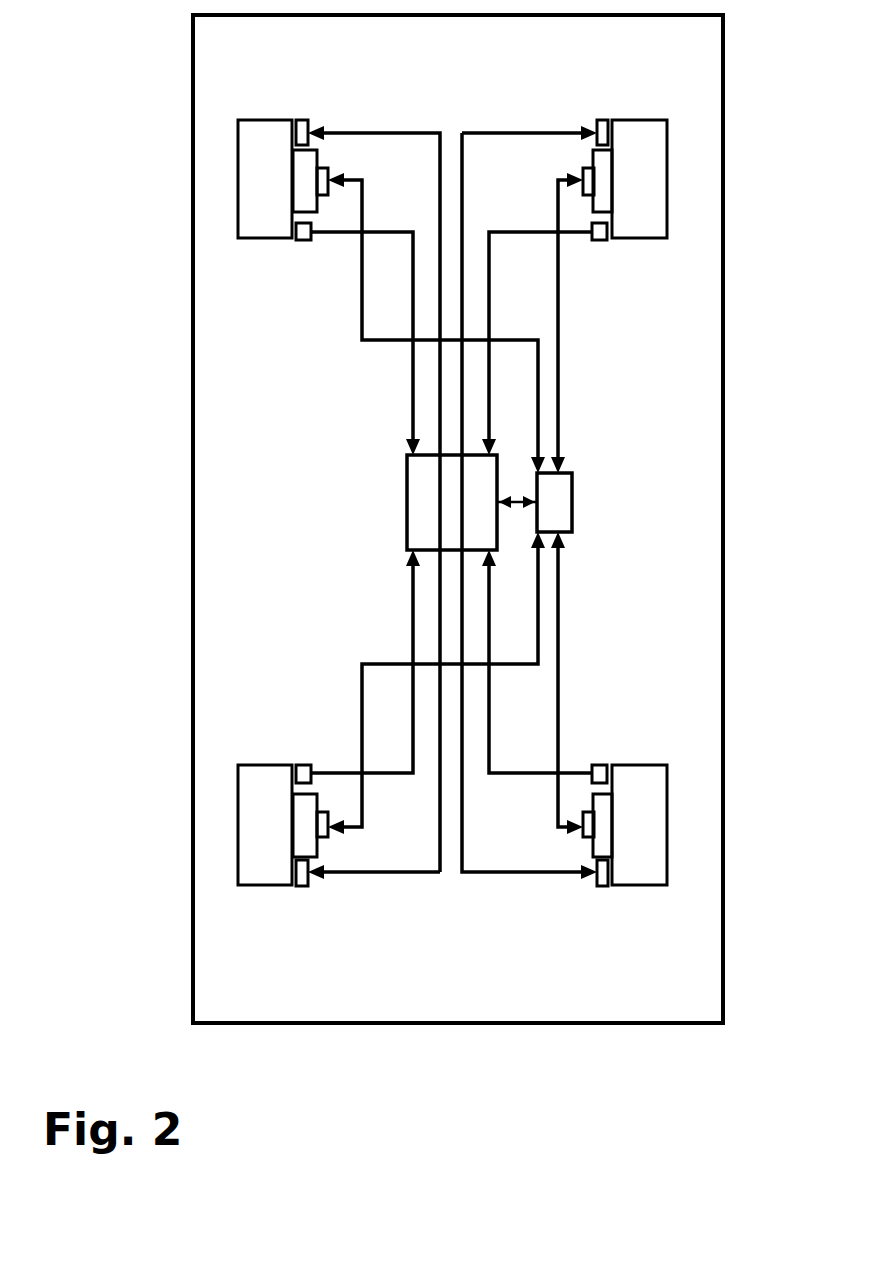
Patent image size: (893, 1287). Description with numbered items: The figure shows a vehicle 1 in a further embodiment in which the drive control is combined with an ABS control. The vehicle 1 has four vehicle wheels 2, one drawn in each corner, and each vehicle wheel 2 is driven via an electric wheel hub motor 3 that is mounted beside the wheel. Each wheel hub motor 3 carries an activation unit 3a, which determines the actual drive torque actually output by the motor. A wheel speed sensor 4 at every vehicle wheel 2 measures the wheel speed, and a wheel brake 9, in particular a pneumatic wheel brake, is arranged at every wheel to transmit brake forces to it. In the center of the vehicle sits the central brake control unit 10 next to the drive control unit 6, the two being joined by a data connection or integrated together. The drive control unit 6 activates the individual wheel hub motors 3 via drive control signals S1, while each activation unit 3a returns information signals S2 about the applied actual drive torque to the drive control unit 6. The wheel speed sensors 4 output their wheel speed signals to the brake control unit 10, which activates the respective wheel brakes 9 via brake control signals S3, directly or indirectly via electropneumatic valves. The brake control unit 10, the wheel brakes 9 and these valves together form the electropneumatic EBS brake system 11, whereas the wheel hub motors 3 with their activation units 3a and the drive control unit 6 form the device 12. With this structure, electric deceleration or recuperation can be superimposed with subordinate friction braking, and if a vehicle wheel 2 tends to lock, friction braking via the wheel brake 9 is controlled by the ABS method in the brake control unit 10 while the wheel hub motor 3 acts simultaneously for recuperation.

The vehicle 1 is at (193, 68).
The vehicle wheel 2 is at (250, 210).
The wheel hub motor 3 is at (320, 163).
The activation unit of the wheel hub motor 3a is at (328, 175).
The wheel speed sensor 4 is at (303, 240).
The drive control unit 6 is at (572, 502).
The wheel brake 9 is at (300, 120).
The brake control unit 10 is at (422, 505).
The electropneumatic EBS brake system 11 is at (378, 538).
The device 12 is at (238, 538).
The drive control signals S1 is at (471, 505).
The motor torque information signal S2 is at (488, 378).
The brake control signal S3 is at (440, 130).